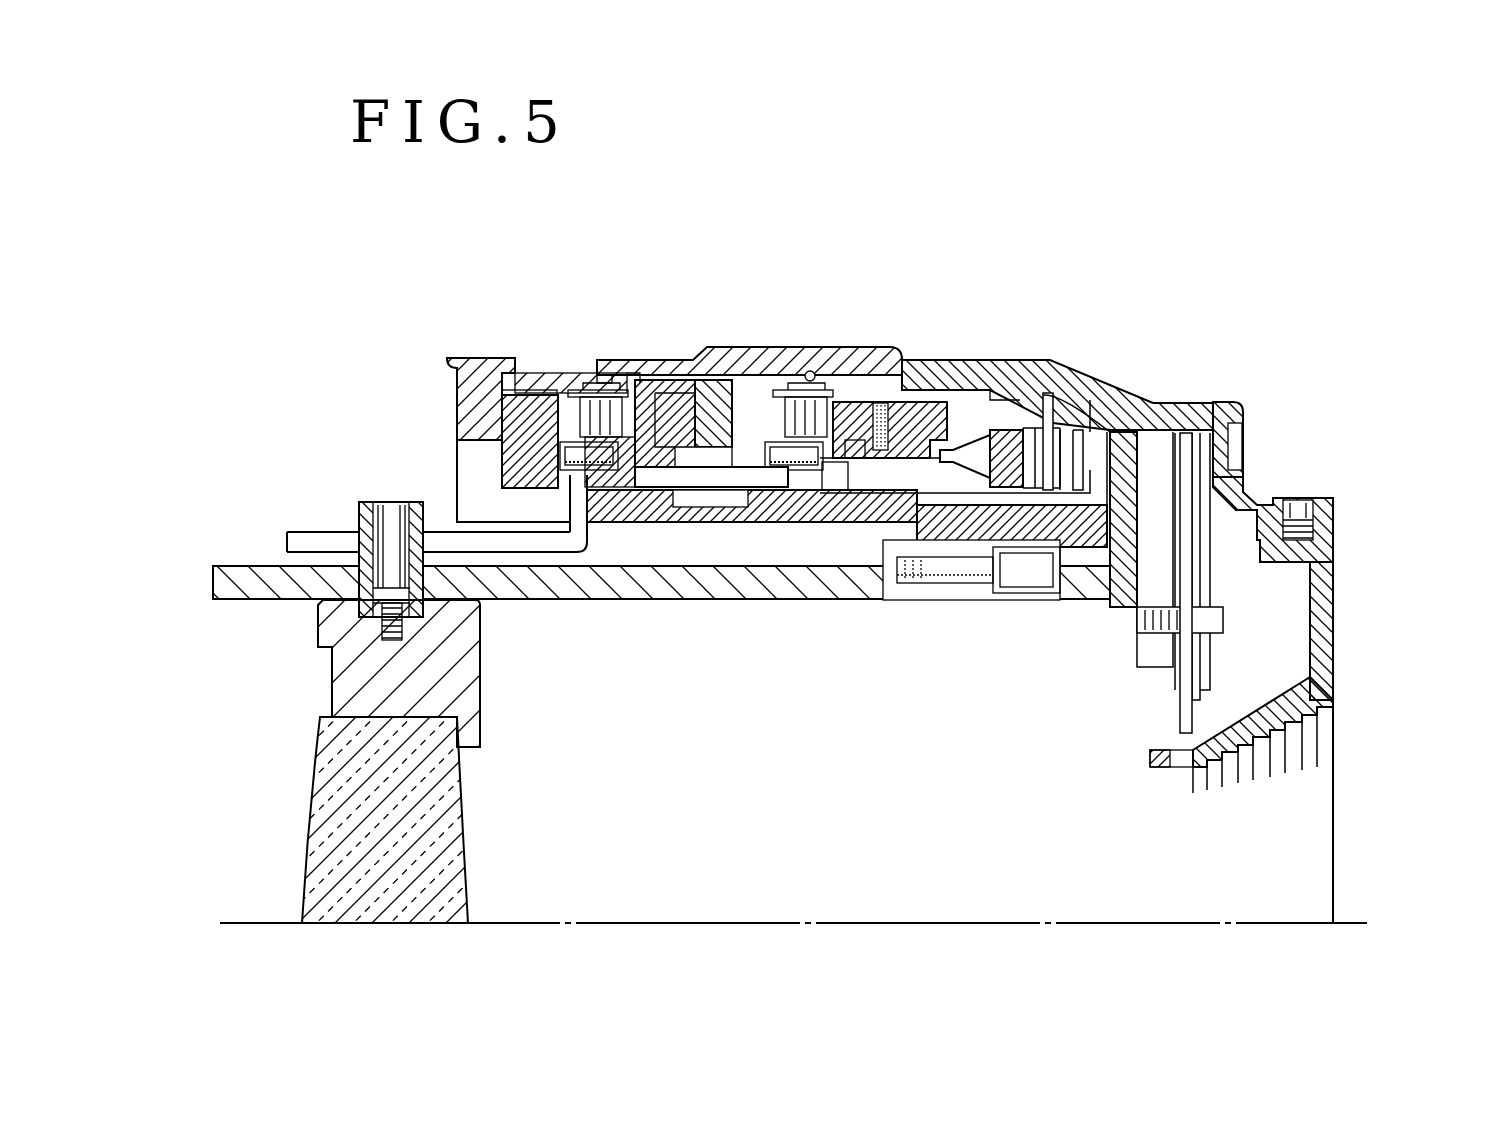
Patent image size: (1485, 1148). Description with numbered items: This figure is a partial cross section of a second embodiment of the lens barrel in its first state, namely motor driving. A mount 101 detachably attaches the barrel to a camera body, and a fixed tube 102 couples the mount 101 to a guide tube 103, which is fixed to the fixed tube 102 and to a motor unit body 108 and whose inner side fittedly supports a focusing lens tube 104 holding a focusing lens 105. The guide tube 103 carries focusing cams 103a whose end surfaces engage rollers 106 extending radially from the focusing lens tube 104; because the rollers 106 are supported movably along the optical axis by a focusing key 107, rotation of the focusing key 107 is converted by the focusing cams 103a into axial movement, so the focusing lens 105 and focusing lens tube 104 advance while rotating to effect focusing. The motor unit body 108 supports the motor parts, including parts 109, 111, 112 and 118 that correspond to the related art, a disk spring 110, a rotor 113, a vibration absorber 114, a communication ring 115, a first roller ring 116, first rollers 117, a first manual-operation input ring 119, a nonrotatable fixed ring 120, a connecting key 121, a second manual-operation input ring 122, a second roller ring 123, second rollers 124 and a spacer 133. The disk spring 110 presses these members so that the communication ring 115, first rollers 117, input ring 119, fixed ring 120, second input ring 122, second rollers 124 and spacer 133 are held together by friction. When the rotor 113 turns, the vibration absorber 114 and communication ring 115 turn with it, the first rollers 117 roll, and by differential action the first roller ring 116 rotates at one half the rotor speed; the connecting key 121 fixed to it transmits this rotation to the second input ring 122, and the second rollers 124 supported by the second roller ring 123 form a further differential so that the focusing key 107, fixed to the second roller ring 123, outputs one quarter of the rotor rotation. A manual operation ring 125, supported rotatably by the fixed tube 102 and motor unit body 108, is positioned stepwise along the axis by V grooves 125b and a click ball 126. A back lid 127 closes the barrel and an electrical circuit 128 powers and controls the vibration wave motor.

The mount 101 is at (1260, 492).
The fixed tube 102 is at (1193, 405).
The guide tube 103 is at (595, 596).
The focusing cams 103a is at (357, 585).
The focusing lens tube 104 is at (453, 672).
The focusing lens 105 is at (438, 843).
The rollers 106 is at (420, 507).
The focusing key 107 is at (442, 540).
The motor unit body 108 is at (1123, 430).
The motor unit part 109 is at (1103, 432).
The disk spring 110 is at (1083, 432).
The motor unit part 111 is at (1068, 435).
The motor unit part 112 is at (1000, 440).
The rotor 113 is at (917, 405).
The vibration absorber 114 is at (925, 405).
The communication ring 115 is at (855, 440).
The first roller ring 116 is at (823, 497).
The first rollers 117 is at (742, 395).
The motor unit part 118 is at (623, 392).
The first manual-operation input ring 119 is at (808, 480).
The fixed ring 120 is at (778, 490).
The connecting key 121 is at (745, 455).
The second manual-operation input ring 122 is at (715, 478).
The second roller ring 123 is at (657, 440).
The second rollers 124 is at (563, 385).
The manual operation ring 125 is at (793, 350).
The V grooves 125b is at (884, 420).
The click ball 126 is at (808, 371).
The back lid 127 is at (1321, 618).
The electrical circuit 128 is at (1182, 718).
The spacer 133 is at (505, 425).